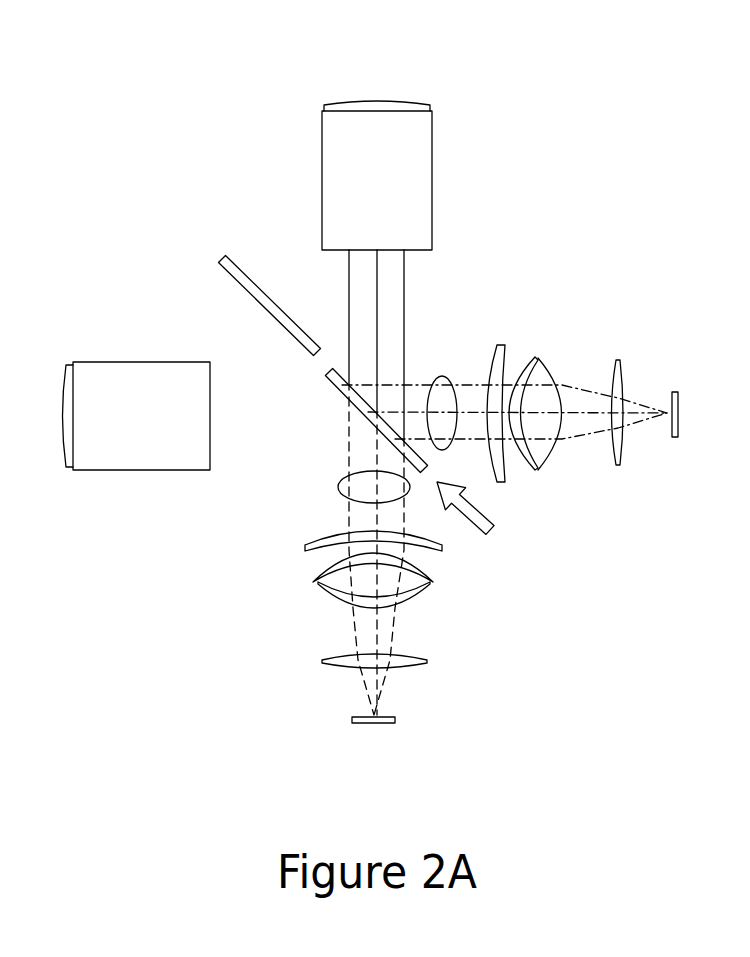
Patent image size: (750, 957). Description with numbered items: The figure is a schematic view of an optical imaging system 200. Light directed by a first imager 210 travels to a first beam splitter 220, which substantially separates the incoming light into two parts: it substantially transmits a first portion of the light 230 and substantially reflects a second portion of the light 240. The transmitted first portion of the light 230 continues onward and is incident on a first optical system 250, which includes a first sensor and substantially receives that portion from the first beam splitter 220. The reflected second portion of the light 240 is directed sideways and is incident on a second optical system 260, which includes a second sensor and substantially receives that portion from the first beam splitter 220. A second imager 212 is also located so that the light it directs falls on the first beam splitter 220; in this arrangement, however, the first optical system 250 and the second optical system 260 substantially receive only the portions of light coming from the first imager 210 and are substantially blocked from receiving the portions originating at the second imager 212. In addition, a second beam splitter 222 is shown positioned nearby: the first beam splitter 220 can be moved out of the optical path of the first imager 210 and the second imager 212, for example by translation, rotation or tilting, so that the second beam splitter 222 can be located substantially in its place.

The optical imaging system 200 is at (150, 93).
The first imager 210 is at (433, 178).
The second imager 212 is at (140, 472).
The first beam splitter 220 is at (330, 373).
The second beam splitter 222 is at (228, 278).
The first portion of the light 230 is at (338, 486).
The second portion of the light 240 is at (441, 374).
The first optical system 250 is at (305, 523).
The second optical system 260 is at (685, 347).